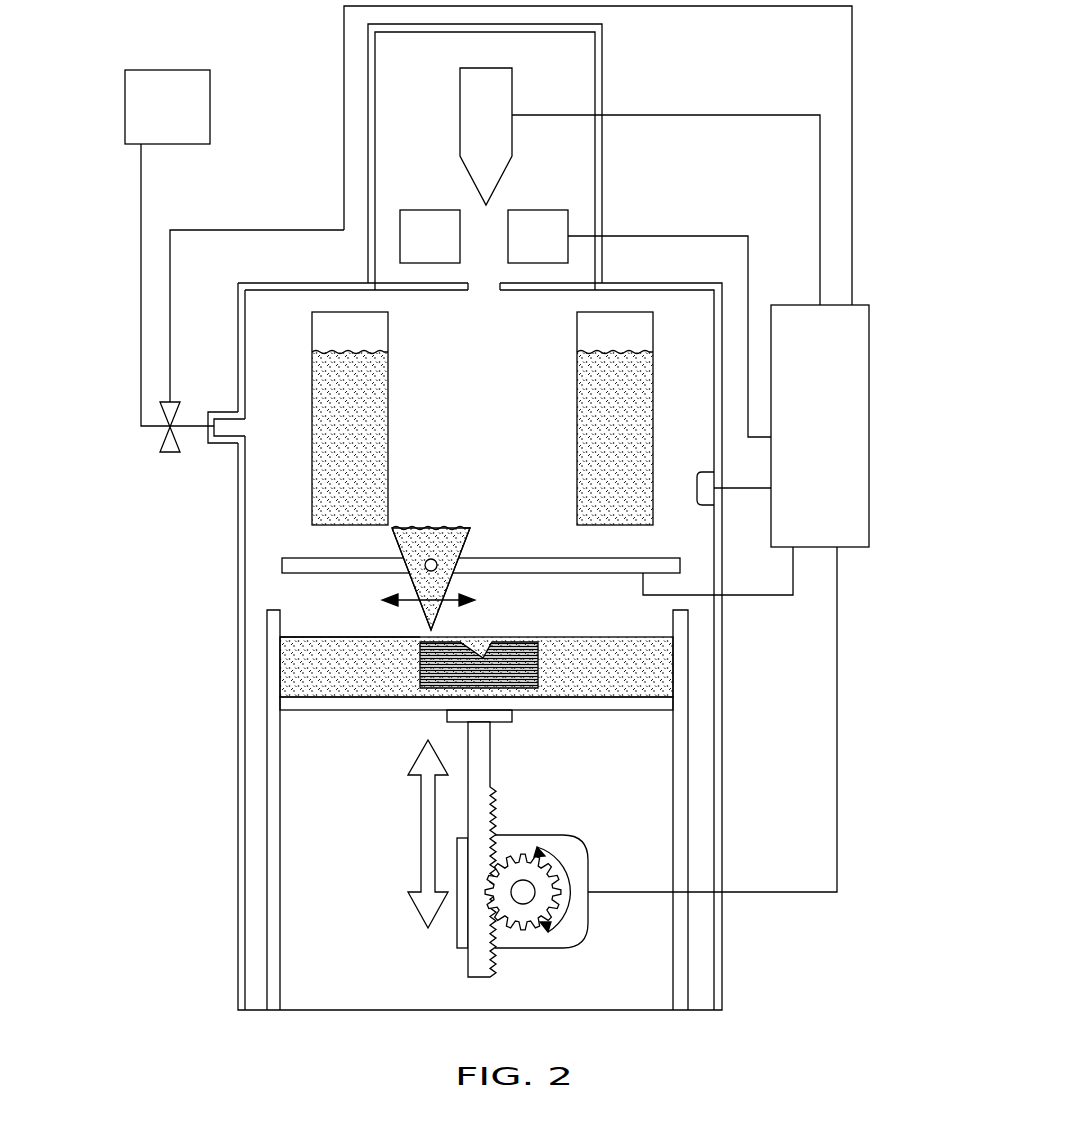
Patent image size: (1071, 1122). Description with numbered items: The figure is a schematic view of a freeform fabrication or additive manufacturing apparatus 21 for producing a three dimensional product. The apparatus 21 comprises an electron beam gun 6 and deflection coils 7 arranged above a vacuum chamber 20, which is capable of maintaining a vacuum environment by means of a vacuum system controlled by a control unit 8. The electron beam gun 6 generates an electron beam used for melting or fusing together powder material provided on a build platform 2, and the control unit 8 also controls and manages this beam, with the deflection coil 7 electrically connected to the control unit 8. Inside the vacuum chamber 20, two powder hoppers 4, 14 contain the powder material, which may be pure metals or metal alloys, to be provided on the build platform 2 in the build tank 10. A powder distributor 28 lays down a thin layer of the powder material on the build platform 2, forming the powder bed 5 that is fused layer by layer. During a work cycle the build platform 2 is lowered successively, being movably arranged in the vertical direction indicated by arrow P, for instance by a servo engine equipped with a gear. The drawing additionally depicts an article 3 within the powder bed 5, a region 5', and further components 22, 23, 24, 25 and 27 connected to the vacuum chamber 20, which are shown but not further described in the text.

The build platform 2 is at (346, 710).
The object being built 3 is at (530, 640).
The powder hopper 4 is at (388, 421).
The powder bed 5 is at (476, 641).
The powder layer 5' is at (295, 609).
The electron beam gun 6 is at (640, 186).
The deflection coil 7 is at (639, 323).
The control unit 8 is at (728, 598).
The build tank 10 is at (270, 845).
The powder hopper 14 is at (577, 421).
The vacuum chamber 20 is at (722, 748).
The freeform fabrication or additive manufacturing apparatus 21 is at (322, 74).
The gas inlet port 22 is at (262, 430).
The valve 23 is at (168, 455).
The sensor 24 is at (700, 505).
The gas supply / control unit 25 is at (167, 107).
The supply line 27 is at (141, 202).
The powder distributor 28 is at (470, 547).
The arrow P is at (420, 848).